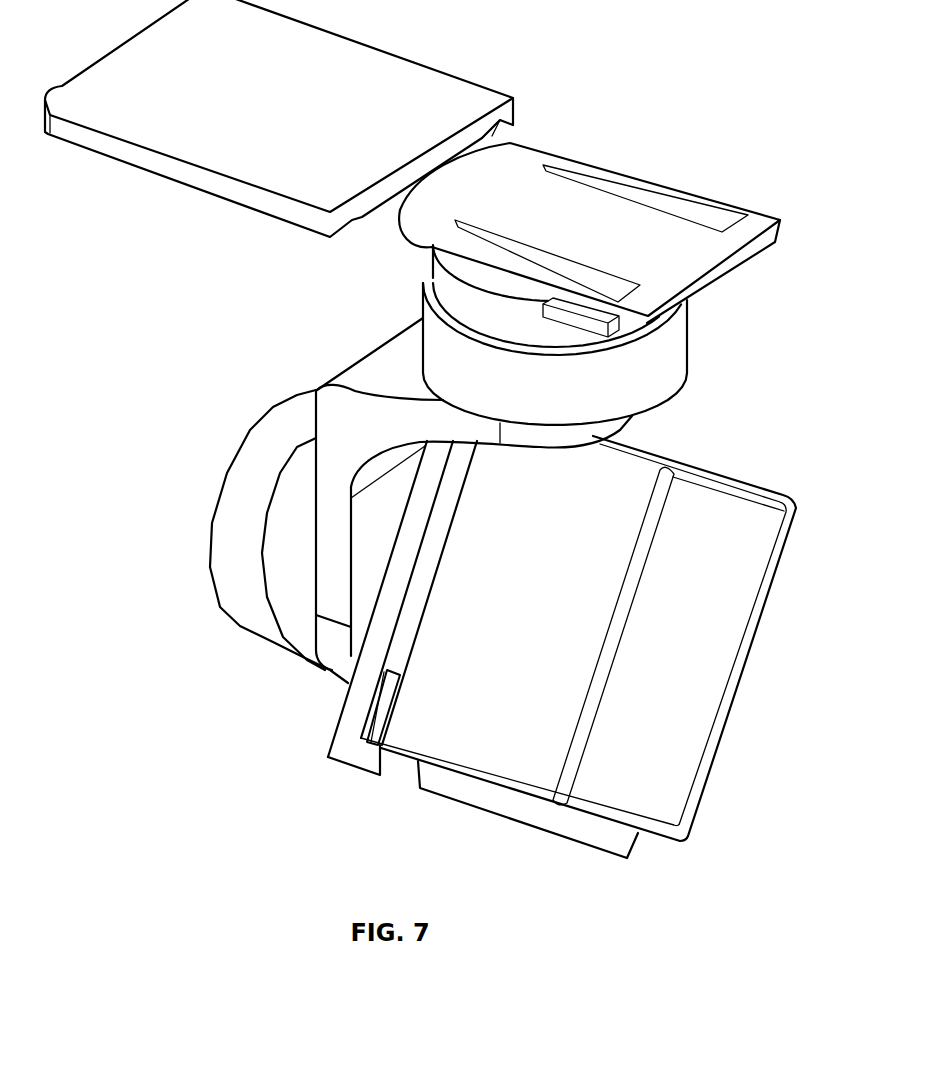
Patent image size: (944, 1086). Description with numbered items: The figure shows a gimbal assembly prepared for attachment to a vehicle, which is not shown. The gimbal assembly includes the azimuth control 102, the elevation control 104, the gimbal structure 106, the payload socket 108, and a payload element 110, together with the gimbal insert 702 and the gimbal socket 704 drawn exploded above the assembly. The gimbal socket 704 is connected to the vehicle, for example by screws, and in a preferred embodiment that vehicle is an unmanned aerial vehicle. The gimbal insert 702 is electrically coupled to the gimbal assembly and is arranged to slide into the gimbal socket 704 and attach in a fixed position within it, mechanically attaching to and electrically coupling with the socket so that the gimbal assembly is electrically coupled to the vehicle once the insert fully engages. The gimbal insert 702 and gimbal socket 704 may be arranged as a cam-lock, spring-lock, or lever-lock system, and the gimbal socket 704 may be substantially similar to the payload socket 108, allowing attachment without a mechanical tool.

The azimuth control 102 is at (688, 338).
The elevation control 104 is at (232, 600).
The gimbal structure 106 is at (367, 365).
The payload socket 108 is at (341, 756).
The display panel 110 is at (744, 679).
The gimbal insert 702 is at (592, 168).
The gimbal socket 704 is at (136, 175).